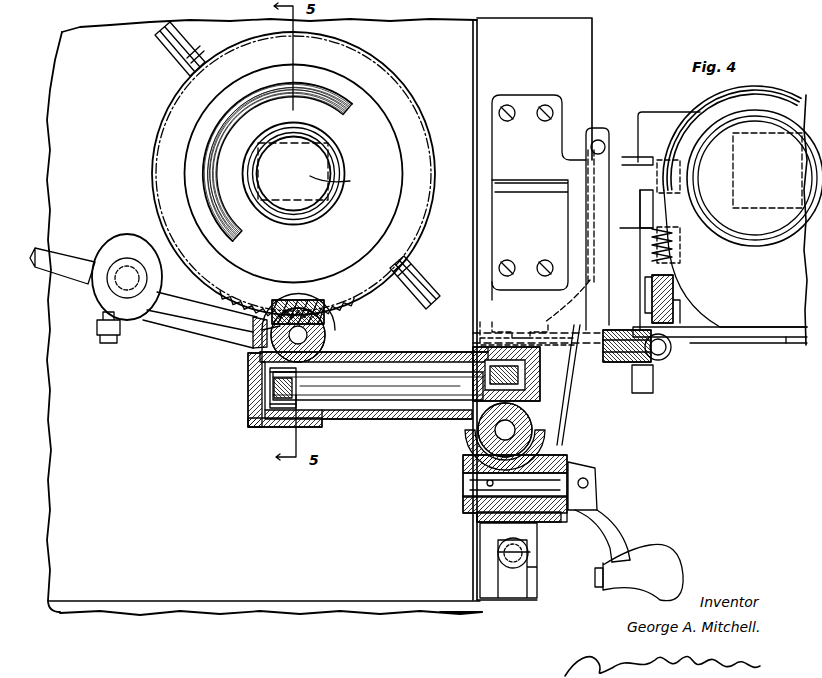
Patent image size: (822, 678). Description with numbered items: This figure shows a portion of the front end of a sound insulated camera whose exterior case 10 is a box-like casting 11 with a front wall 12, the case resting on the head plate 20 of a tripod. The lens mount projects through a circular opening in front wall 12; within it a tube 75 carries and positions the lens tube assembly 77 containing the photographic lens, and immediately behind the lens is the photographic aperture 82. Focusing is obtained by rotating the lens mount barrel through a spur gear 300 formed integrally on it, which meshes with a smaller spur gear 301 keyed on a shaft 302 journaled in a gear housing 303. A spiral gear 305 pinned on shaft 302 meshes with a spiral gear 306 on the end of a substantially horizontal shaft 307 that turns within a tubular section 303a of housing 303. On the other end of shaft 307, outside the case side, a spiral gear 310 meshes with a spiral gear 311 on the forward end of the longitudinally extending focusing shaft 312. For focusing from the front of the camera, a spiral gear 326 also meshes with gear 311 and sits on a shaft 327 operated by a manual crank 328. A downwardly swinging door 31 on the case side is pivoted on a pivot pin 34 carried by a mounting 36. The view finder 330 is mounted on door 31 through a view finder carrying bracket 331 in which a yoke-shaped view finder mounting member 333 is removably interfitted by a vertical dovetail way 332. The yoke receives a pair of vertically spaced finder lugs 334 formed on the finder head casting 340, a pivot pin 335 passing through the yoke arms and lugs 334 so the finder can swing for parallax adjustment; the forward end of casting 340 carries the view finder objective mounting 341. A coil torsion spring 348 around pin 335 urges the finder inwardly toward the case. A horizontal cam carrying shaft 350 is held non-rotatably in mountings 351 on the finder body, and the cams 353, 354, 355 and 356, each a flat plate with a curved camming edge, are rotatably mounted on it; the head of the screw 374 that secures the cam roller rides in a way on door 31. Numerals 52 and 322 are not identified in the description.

The exterior case 10 is at (69, 29).
The box-like casting 11 is at (181, 594).
The front wall 12 is at (300, 565).
The head plate 20 is at (358, 610).
The door 31 is at (575, 50).
The tube 75 is at (355, 120).
The lens tube assembly 77 is at (353, 166).
The photographic aperture 82 is at (293, 202).
The spur gear 300 is at (270, 318).
The spur gear 301 is at (262, 330).
The shaft 302 is at (330, 318).
The gear housing 303 is at (262, 436).
The tubular section 303a is at (438, 347).
The spiral gear 305 is at (327, 346).
The spiral gear 306 is at (286, 412).
The horizontal shaft 307 is at (390, 392).
The spiral gear 310 is at (496, 347).
The spiral gear 311 is at (490, 435).
The focusing shaft 312 is at (562, 437).
The shaft 52 is at (560, 424).
The spiral gear 326 is at (483, 520).
The shaft 327 is at (472, 484).
The manual crank 328 is at (660, 562).
The view finder 330 is at (677, 108).
The view finder carrying bracket 331 is at (520, 120).
The vertical dovetail way 332 is at (588, 222).
The view finder mounting member 333 is at (620, 187).
The finder lugs 334 is at (645, 210).
The pivot pin 335 is at (690, 342).
The finder head casting 340 is at (730, 352).
The view finder objective mounting 341 is at (795, 102).
The coil torsion spring 348 is at (675, 256).
The cam carrying shaft 350 is at (652, 392).
The mountings 351 is at (662, 352).
The cam 353 is at (748, 352).
The cam 354 is at (598, 345).
The cam 355 is at (592, 345).
The cam 356 is at (586, 345).
The screw 374 is at (502, 326).
The cover 322 is at (746, 2).
The pivot pin 34 is at (513, 566).
The mounting 36 is at (520, 588).